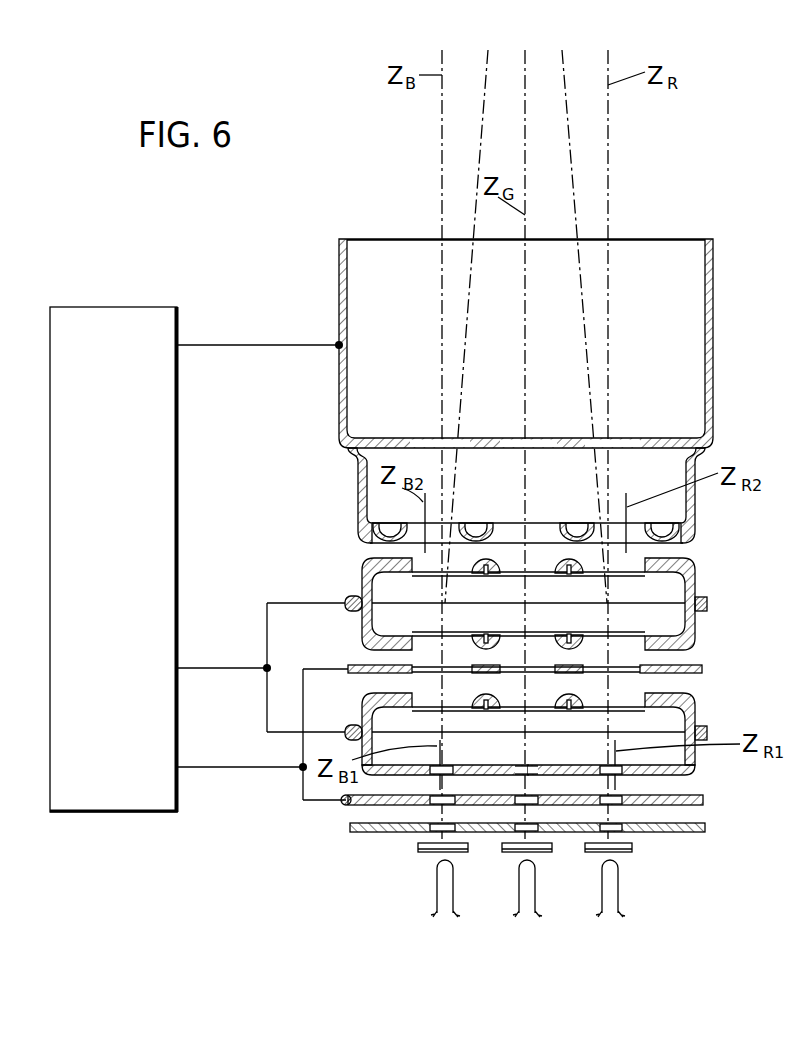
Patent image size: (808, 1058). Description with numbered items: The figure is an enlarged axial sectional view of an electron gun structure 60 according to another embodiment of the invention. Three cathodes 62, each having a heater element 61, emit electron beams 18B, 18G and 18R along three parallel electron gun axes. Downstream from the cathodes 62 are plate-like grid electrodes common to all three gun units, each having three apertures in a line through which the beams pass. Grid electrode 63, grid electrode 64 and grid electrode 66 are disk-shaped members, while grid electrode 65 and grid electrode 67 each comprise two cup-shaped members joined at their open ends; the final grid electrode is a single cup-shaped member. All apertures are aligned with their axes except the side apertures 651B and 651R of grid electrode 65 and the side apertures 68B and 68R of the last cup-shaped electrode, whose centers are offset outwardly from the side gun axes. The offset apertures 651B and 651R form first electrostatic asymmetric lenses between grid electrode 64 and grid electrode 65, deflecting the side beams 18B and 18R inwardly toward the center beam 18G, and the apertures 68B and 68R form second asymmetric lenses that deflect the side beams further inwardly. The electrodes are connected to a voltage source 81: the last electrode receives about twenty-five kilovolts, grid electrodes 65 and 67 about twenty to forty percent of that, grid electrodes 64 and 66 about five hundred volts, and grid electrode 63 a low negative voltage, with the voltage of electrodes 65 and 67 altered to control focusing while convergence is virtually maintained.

The blue electron beam 18B is at (487, 70).
The center electron beam 18G is at (526, 70).
The red electron beam 18R is at (565, 65).
The electron gun structure 60 is at (641, 237).
The side aperture of grid electrode 68 68B is at (403, 527).
The side aperture of grid electrode 68 68R is at (643, 530).
The grid electrode 67 is at (706, 602).
The grid electrode 66 is at (705, 670).
The grid electrode 65 is at (706, 734).
The side aperture of grid electrode 65 651B is at (437, 770).
The side aperture of grid electrode 65 651R is at (625, 777).
The grid electrode 64 is at (705, 801).
The grid electrode 63 is at (705, 831).
The cathodes 62 is at (632, 847).
The heater elements 61 is at (620, 890).
The voltage source 81 is at (118, 312).